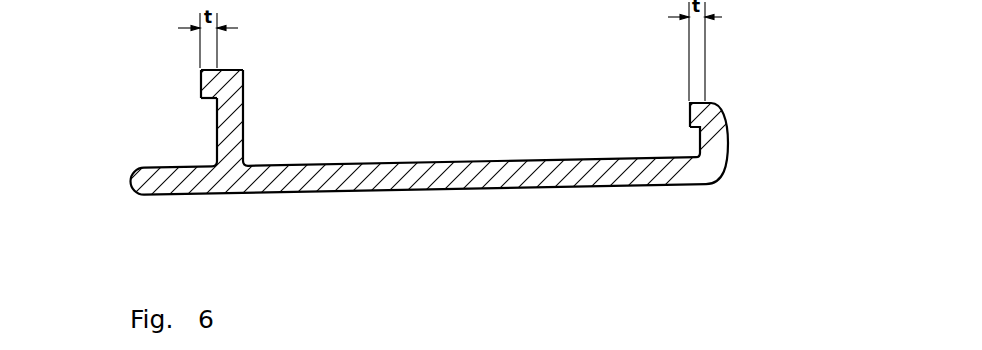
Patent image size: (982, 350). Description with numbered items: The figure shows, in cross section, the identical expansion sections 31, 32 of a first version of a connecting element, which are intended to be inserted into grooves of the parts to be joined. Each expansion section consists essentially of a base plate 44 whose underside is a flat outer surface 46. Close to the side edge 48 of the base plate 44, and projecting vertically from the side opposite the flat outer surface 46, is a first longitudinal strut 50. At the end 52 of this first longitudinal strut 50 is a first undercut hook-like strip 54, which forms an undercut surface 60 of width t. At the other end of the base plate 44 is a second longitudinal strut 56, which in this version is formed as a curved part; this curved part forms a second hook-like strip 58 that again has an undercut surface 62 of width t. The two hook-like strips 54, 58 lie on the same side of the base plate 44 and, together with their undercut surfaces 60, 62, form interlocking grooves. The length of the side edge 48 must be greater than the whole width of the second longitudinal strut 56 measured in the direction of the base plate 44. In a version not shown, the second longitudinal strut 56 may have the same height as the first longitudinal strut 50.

The expansion section 31 is at (434, 145).
The expansion section 32 is at (434, 145).
The base plate 44 is at (338, 178).
The flat outer surface 46 is at (397, 190).
The edge 48 is at (131, 181).
The first longitudinal strut 50 is at (230, 117).
The end 52 is at (230, 70).
The first undercut hook-like strip 54 is at (201, 84).
The undercut surface 60 is at (210, 98).
The second longitudinal strut 56 is at (723, 142).
The second hook-like strip 58 is at (717, 108).
The undercut surface 62 is at (700, 158).